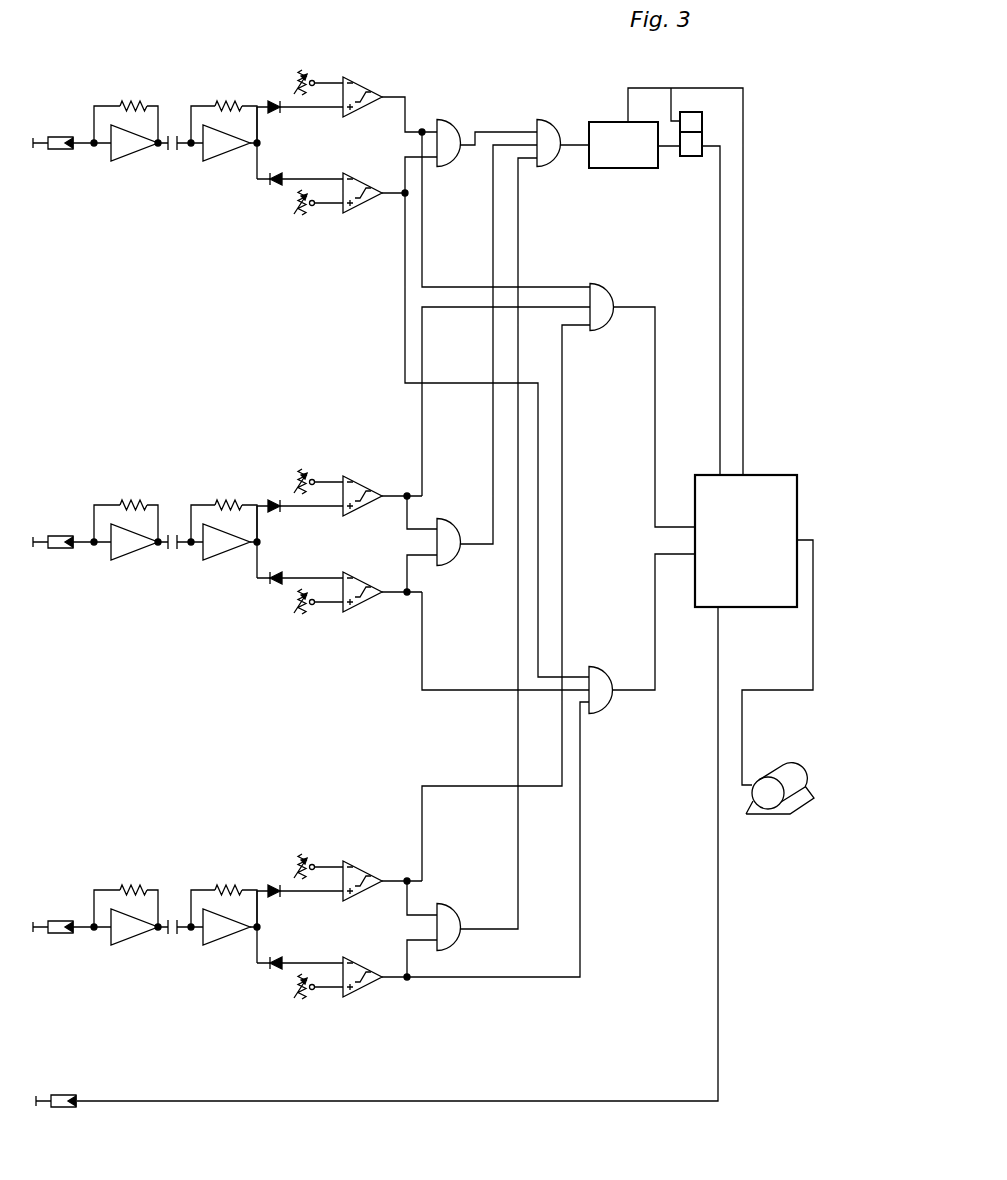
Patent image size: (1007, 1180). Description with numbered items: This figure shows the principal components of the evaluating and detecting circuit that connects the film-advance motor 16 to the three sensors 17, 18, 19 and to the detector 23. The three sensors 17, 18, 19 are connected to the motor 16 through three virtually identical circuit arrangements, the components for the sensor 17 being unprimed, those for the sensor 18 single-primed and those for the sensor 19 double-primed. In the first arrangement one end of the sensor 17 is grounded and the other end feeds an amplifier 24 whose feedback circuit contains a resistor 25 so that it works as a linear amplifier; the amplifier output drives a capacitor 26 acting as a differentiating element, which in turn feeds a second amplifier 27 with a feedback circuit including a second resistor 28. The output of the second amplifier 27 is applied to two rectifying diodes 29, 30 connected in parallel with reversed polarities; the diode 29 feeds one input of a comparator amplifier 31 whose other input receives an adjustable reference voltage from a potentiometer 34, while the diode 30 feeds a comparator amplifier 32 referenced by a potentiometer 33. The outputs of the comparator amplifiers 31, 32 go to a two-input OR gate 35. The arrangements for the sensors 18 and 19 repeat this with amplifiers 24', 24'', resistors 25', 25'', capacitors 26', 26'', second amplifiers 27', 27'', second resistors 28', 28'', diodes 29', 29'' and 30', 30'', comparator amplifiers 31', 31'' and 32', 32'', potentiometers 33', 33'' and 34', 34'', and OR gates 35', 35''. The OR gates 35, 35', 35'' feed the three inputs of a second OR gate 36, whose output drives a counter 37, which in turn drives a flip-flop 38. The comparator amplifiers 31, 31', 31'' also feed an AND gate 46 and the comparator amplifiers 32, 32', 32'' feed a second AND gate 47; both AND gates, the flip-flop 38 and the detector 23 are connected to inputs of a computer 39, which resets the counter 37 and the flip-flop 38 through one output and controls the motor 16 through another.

The motor 16 is at (762, 771).
The sensor 17 is at (58, 151).
The sensor 18 is at (58, 550).
The sensor 19 is at (58, 935).
The detector 23 is at (58, 1108).
The amplifier 24 is at (134, 161).
The amplifier 24' is at (134, 560).
The amplifier 24'' is at (135, 945).
The resistor 25 is at (126, 103).
The resistor 25' is at (126, 502).
The resistor 25'' is at (129, 887).
The capacitor 26 is at (177, 166).
The capacitor 26' is at (180, 565).
The capacitor 26'' is at (183, 950).
The second amplifier 27 is at (226, 161).
The second amplifier 27' is at (226, 560).
The second amplifier 27'' is at (226, 945).
The second resistor 28 is at (224, 103).
The second resistor 28' is at (224, 502).
The second resistor 28'' is at (224, 887).
The diode 29 is at (300, 127).
The diode 29' is at (300, 526).
The diode 29'' is at (300, 911).
The diode 30 is at (282, 199).
The diode 30' is at (282, 598).
The diode 30'' is at (282, 983).
The comparator amplifier 31 is at (378, 92).
The comparator amplifier 31' is at (381, 491).
The comparator amplifier 31'' is at (384, 876).
The comparator amplifier 32 is at (373, 201).
The comparator amplifier 32' is at (376, 600).
The comparator amplifier 32'' is at (379, 985).
The potentiometer 33 is at (304, 208).
The potentiometer 33' is at (304, 607).
The potentiometer 33'' is at (304, 992).
The potentiometer 34 is at (304, 82).
The potentiometer 34' is at (304, 481).
The potentiometer 34'' is at (304, 866).
The OR gate 35 is at (449, 117).
The OR gate 35' is at (452, 516).
The OR gate 35'' is at (455, 901).
The second OR gate 36 is at (538, 118).
The counter 37 is at (603, 132).
The flip-flop 38 is at (697, 124).
The computer 39 is at (700, 488).
The AND gate 46 is at (616, 273).
The second AND gate 47 is at (598, 712).